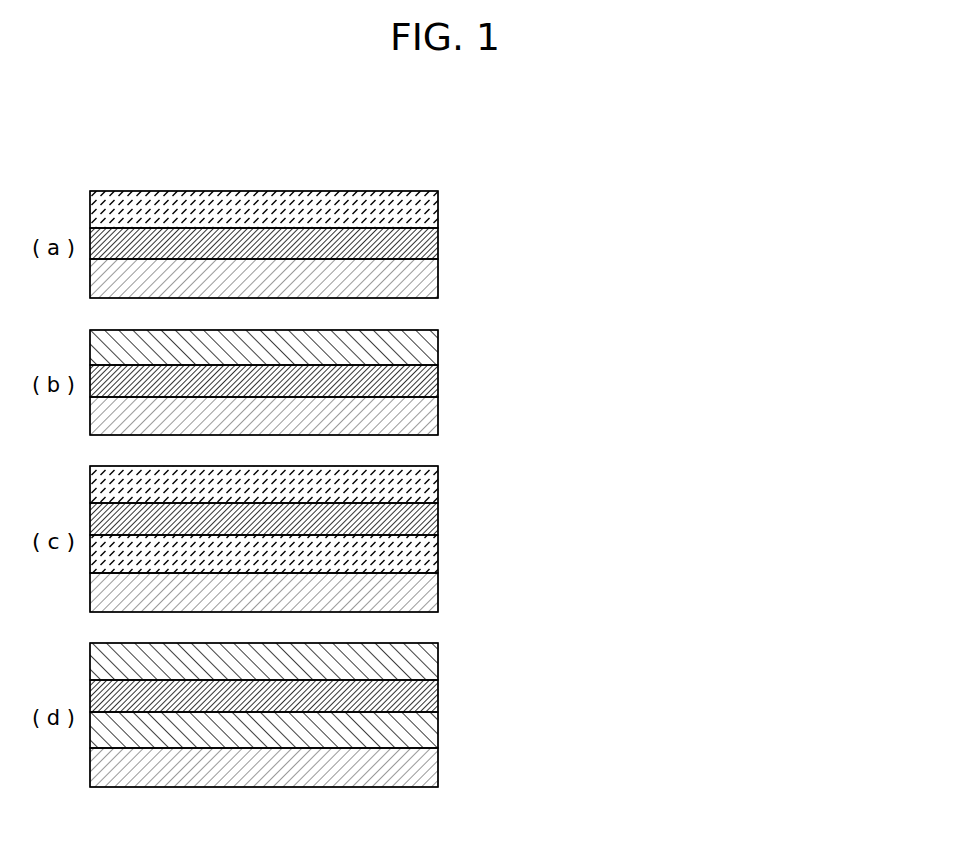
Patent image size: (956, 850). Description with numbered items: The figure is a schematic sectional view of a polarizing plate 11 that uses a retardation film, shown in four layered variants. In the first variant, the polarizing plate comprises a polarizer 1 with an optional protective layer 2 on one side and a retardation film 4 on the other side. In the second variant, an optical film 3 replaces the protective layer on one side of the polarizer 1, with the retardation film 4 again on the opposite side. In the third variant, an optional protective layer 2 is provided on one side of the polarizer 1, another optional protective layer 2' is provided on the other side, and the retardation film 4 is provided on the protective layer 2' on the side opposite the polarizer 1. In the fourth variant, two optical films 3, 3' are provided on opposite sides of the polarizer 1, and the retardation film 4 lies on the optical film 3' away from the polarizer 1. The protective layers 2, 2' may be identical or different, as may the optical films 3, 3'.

The polarizing plate 11 is at (346, 158).
The polarizer 1 is at (423, 245).
The optional protective layer 2 is at (485, 347).
The optional protective layer 2' is at (488, 554).
The optical film 3 is at (425, 505).
The optical film 3' is at (443, 730).
The retardation film 4 is at (423, 279).